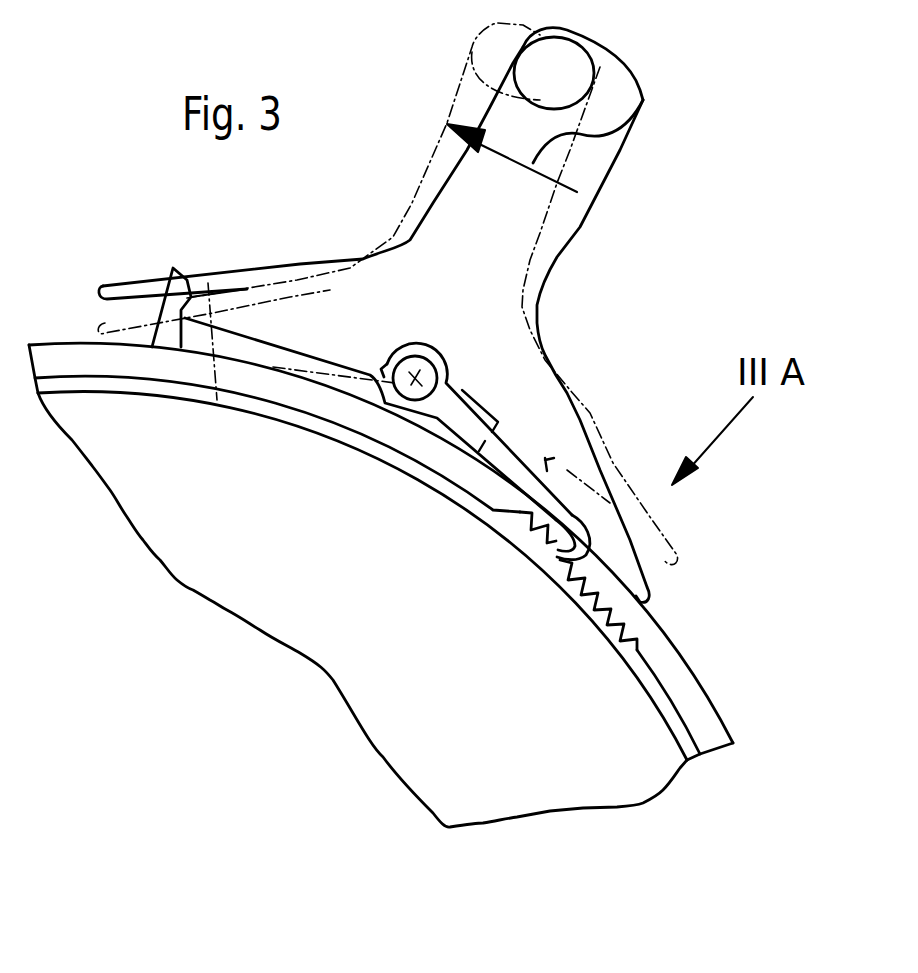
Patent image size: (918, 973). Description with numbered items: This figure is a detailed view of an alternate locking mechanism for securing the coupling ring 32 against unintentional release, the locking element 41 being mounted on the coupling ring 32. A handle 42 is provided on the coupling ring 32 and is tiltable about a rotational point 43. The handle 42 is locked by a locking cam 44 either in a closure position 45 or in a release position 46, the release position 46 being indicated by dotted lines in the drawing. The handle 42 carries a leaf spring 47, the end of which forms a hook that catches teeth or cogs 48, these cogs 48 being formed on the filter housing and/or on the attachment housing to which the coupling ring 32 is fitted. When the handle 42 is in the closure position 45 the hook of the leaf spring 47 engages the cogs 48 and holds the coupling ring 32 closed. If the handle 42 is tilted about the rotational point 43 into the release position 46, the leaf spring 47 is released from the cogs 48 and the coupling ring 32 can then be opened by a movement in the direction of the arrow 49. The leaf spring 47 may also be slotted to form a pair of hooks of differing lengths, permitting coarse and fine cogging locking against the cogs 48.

The coupling ring 32 is at (53, 346).
The lever 41 is at (358, 250).
The handle 42 is at (587, 170).
The rotational point 43 is at (415, 378).
The locking cam 44 is at (167, 328).
The closure position 45 is at (204, 282).
The release position 46 is at (217, 400).
The leaf spring 47 is at (548, 470).
The teeth or cogs 48 is at (570, 562).
The arrow 49 is at (628, 113).